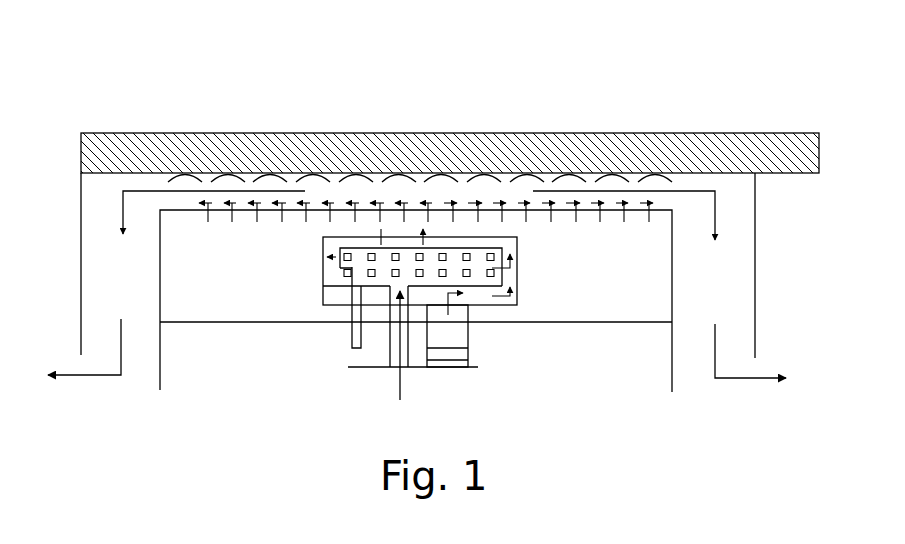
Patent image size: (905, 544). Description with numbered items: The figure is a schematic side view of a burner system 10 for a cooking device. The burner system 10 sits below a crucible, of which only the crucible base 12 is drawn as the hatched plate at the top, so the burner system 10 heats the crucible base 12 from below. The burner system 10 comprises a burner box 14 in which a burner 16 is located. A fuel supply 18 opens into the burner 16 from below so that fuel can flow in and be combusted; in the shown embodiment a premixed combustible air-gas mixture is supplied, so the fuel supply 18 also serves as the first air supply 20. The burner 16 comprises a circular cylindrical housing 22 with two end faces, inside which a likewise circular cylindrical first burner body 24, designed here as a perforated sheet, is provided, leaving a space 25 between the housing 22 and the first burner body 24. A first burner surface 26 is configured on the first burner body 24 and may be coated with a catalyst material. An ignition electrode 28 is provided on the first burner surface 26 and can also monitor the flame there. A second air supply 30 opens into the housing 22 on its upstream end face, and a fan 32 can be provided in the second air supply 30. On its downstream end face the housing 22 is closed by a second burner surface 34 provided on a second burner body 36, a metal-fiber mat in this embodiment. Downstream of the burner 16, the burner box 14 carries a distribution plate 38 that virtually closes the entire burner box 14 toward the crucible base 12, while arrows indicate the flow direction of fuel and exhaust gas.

The burner system 10 is at (219, 416).
The crucible base 12 is at (270, 133).
The burner box 14 is at (160, 252).
The burner 16 is at (318, 279).
The fuel supply 18 is at (401, 366).
The first air supply 20 is at (387, 372).
The housing 22 is at (323, 304).
The first burner body 24 is at (443, 187).
The space 25 is at (322, 262).
The first burner surface 26 is at (453, 257).
The ignition electrode 28 is at (352, 334).
The second air supply 30 is at (457, 332).
The fan 32 is at (470, 356).
The second burner surface 34 is at (420, 151).
The second burner body 36 is at (413, 200).
The distribution plate 38 is at (636, 206).